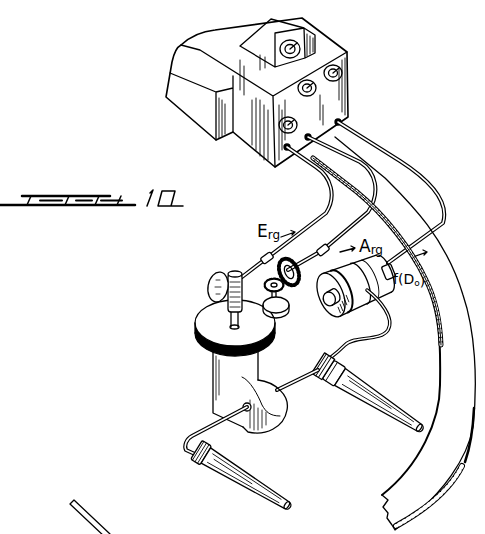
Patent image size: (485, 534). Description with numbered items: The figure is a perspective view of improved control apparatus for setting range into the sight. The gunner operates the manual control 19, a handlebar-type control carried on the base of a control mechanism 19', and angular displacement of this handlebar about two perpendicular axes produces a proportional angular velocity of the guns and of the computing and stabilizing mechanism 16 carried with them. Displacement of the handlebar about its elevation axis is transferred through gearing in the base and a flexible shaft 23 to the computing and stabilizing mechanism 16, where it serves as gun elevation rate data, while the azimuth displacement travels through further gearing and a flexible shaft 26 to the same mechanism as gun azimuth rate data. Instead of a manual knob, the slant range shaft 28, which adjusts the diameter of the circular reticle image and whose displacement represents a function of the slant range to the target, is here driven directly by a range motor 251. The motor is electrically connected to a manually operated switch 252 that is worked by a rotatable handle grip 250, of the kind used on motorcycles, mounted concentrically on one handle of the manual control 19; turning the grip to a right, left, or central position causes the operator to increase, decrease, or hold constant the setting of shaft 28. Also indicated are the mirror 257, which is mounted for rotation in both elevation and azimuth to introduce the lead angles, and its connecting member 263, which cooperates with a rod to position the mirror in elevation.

The computing and stabilizing mechanism 16 is at (346, 47).
The flexible shaft 23 is at (327, 207).
The flexible shaft 26 is at (369, 208).
The slant range shaft 28 is at (447, 206).
The range motor 251 is at (387, 293).
The manually operated switch 252 is at (342, 364).
The rotatable handle grip 250 is at (383, 393).
The control mechanism 19' is at (250, 345).
The manual control 19 is at (234, 460).
The mirror 257 is at (90, 513).
The connecting member 263 is at (57, 532).